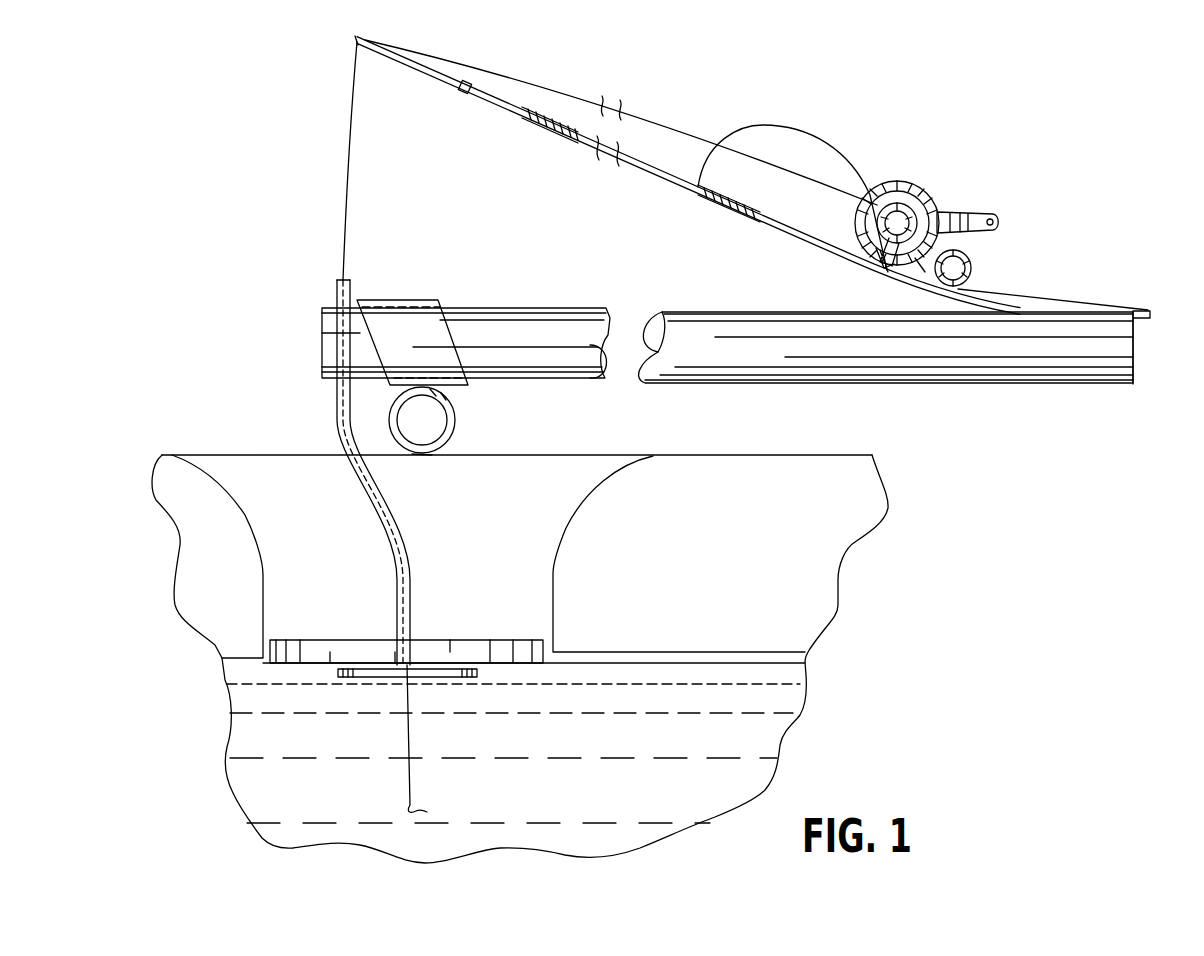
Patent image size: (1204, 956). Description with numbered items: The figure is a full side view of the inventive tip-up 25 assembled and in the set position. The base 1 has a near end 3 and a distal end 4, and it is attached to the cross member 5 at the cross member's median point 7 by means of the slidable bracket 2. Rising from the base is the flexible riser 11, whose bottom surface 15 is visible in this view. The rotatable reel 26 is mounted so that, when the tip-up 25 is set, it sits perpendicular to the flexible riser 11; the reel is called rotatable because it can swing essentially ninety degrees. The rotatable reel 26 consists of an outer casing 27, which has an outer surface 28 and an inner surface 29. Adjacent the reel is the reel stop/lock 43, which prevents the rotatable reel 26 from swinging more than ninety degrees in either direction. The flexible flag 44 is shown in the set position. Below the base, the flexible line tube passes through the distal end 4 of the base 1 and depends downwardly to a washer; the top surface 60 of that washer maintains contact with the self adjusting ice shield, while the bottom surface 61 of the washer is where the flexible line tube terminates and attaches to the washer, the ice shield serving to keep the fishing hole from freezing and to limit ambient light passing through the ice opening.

The base 1 is at (1043, 373).
The slidable bracket 2 is at (450, 358).
The near end 3 is at (1135, 348).
The distal end 4 is at (322, 337).
The cross member 5 is at (430, 453).
The median point 7 is at (455, 408).
The flexible riser 11 is at (517, 117).
The bottom surface 15 is at (613, 160).
The tip-up 25 is at (927, 436).
The rotatable reel 26 is at (897, 218).
The outer casing 27 is at (933, 195).
The outer surface 28 is at (877, 190).
The inner surface 29 is at (880, 268).
The reel stop/lock 43 is at (970, 253).
The flexible flag 44 is at (732, 125).
The top surface of washer 60 is at (352, 668).
The bottom surface of washer 61 is at (447, 678).